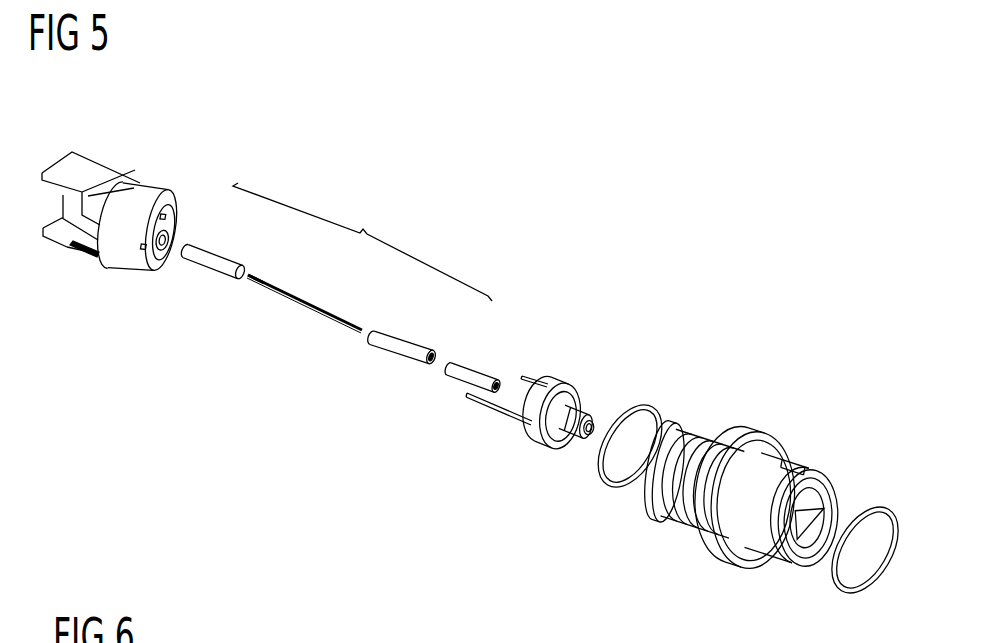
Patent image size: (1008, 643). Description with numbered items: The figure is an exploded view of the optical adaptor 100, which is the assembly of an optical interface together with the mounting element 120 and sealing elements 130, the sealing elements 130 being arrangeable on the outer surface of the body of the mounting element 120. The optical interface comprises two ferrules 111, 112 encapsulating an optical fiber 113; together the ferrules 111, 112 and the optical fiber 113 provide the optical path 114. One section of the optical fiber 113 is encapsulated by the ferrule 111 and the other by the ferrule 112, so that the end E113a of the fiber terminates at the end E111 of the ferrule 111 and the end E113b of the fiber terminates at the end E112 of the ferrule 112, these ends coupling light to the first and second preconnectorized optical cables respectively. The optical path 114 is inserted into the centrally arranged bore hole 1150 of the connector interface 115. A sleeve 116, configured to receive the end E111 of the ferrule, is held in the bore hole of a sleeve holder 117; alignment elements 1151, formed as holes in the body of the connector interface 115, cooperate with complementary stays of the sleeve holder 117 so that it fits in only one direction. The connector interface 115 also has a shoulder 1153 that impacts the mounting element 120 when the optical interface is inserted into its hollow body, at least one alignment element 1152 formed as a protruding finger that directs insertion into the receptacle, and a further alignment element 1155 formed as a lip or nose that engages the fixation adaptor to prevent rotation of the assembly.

The optical adaptor 100 is at (586, 212).
The connector interface 115 is at (138, 160).
The alignment element 1152 is at (80, 165).
The shoulder 1153 is at (140, 185).
The alignment element 1151 is at (123, 257).
The bore hole 1150 is at (165, 250).
The alignment element 1155 is at (83, 257).
The ferrule 112 is at (213, 282).
The end of the ferrule 112 E112 is at (185, 242).
The optical fiber 113 is at (313, 322).
The end of the optical fiber E113b is at (280, 250).
The end of the optical fiber E113a is at (367, 327).
The ferrule 111 is at (383, 362).
The end of the ferrule 111 E111 is at (433, 352).
The optical path 114 is at (362, 242).
The sleeve 116 is at (492, 366).
The sleeve holder 117 is at (582, 378).
The sealing elements 130 is at (617, 483).
The mounting element 120 is at (774, 421).